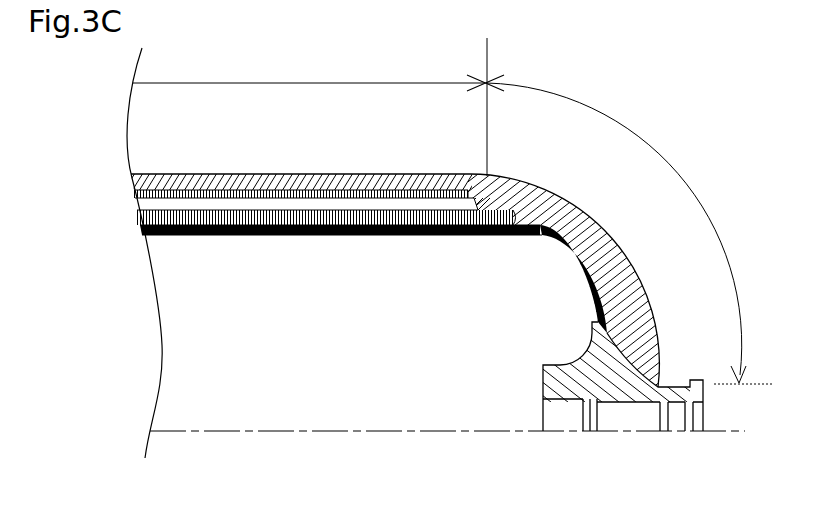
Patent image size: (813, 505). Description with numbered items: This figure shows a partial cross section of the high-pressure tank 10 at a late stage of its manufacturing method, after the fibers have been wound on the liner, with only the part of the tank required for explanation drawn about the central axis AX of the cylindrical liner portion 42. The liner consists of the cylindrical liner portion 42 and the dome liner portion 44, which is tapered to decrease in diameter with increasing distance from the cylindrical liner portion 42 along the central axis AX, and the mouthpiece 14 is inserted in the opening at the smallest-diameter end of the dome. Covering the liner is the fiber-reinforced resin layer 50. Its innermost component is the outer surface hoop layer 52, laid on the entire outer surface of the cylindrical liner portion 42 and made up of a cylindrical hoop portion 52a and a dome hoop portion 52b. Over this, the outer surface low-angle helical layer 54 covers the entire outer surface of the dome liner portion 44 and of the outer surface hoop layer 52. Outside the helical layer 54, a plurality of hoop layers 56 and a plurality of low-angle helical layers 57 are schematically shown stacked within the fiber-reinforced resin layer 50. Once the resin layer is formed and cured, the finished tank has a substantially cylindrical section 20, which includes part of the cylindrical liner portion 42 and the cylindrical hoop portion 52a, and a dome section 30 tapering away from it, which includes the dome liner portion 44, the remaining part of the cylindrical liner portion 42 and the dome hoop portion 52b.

The high-pressure tank 10 is at (716, 89).
The mouthpiece 14 is at (586, 364).
The cylindrical section 20 is at (318, 107).
The dome section 30 is at (629, 222).
The cylindrical liner portion 42 is at (365, 236).
The dome liner portion 44 is at (573, 263).
The fiber-reinforced resin layer 50 is at (526, 159).
The outer surface hoop layer 52 is at (400, 289).
The cylindrical hoop portion 52a is at (423, 236).
The dome hoop portion 52b is at (500, 237).
The outer surface low-angle helical layer 54 is at (290, 236).
The hoop layers 56 is at (268, 172).
The low-angle helical layers 57 is at (336, 172).
The central axis AX is at (392, 432).